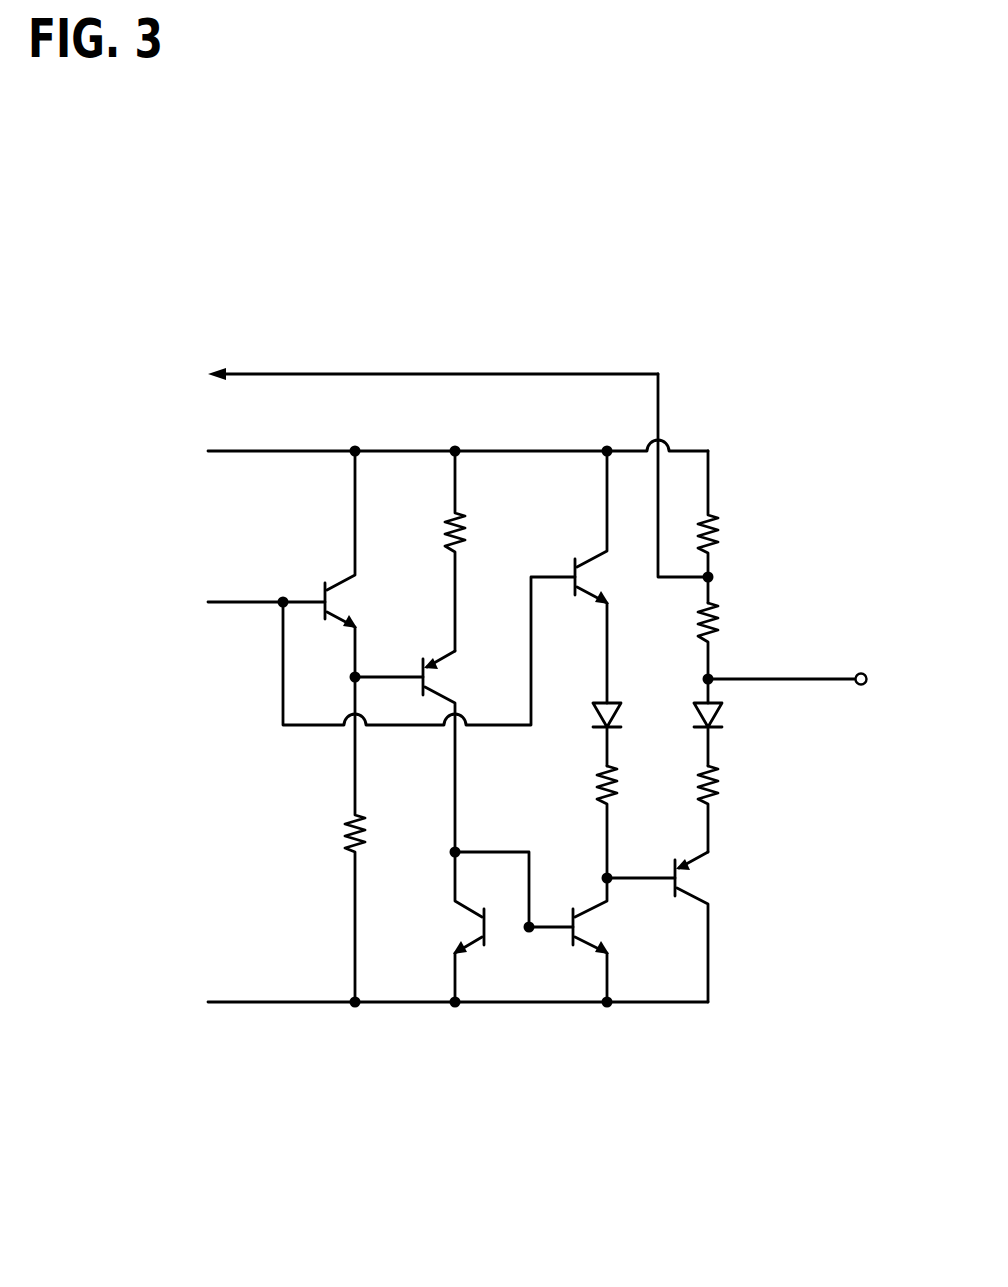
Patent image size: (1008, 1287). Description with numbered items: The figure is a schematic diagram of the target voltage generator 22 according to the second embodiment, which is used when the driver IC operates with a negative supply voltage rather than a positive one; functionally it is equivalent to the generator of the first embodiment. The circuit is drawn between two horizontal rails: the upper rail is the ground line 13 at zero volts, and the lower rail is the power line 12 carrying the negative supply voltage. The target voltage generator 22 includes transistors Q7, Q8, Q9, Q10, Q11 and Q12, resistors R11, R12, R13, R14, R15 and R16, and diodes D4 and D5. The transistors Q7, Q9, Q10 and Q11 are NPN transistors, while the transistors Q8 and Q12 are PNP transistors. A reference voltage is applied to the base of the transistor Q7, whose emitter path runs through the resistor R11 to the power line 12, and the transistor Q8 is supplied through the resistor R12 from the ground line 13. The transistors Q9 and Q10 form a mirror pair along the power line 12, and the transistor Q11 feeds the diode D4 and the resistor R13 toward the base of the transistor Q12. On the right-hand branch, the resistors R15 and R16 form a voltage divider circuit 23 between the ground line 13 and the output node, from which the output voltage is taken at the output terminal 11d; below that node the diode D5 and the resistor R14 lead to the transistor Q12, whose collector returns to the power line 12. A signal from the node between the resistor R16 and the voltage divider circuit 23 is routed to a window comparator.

The target voltage generator 22 is at (449, 347).
The ground line 13 is at (297, 449).
The power line 12 is at (283, 1004).
The voltage divider circuit 23 is at (752, 585).
The output terminal 11d is at (859, 672).
The transistor Q7 is at (341, 584).
The transistor Q8 is at (443, 666).
The transistor Q9 is at (464, 913).
The transistor Q10 is at (590, 916).
The transistor Q11 is at (592, 565).
The transistor Q12 is at (688, 865).
The resistor R11 is at (345, 830).
The resistor R12 is at (468, 531).
The resistor R13 is at (619, 784).
The resistor R14 is at (720, 784).
The resistor R15 is at (720, 620).
The resistor R16 is at (720, 531).
The diode D4 is at (620, 711).
The diode D5 is at (722, 711).